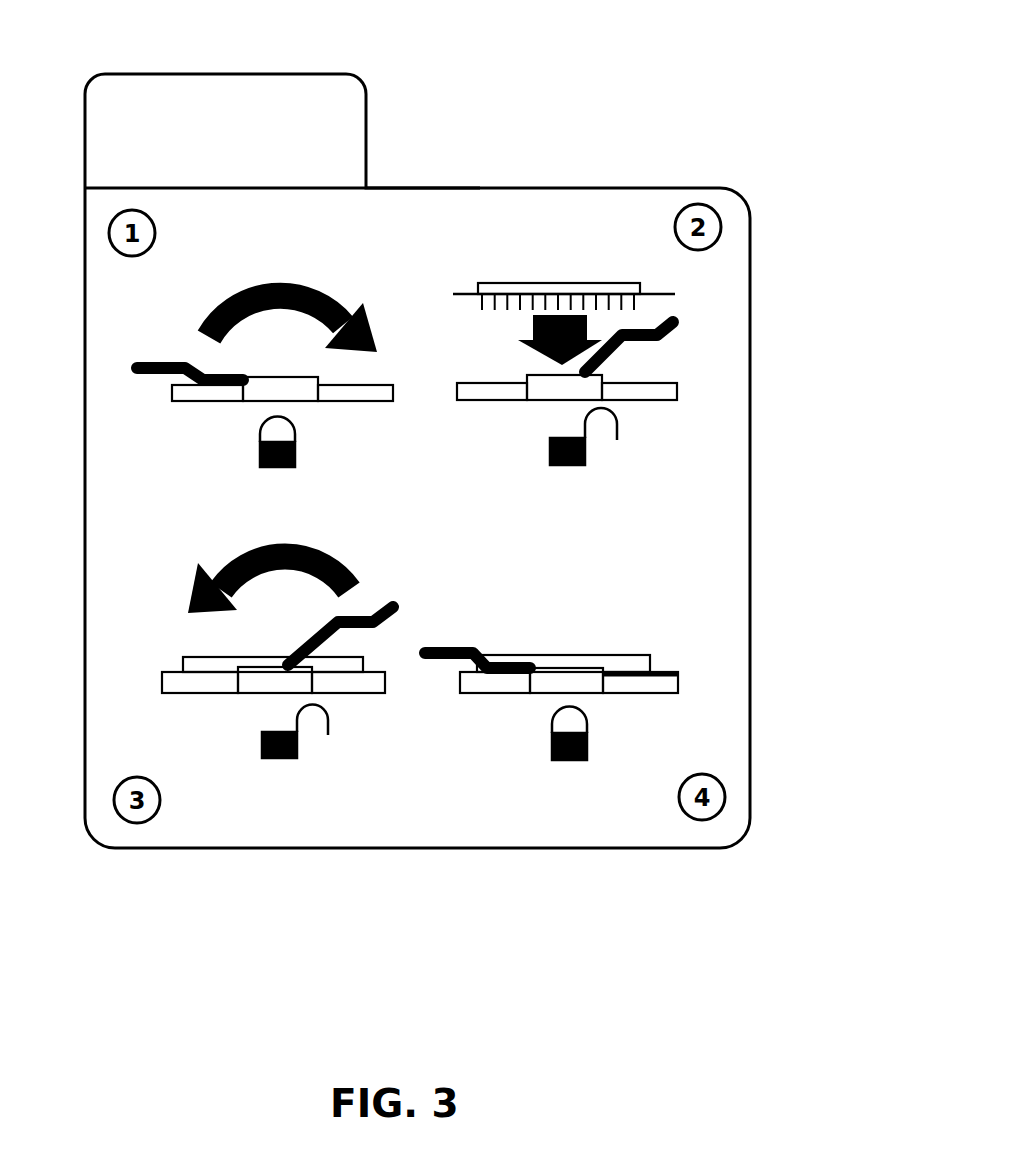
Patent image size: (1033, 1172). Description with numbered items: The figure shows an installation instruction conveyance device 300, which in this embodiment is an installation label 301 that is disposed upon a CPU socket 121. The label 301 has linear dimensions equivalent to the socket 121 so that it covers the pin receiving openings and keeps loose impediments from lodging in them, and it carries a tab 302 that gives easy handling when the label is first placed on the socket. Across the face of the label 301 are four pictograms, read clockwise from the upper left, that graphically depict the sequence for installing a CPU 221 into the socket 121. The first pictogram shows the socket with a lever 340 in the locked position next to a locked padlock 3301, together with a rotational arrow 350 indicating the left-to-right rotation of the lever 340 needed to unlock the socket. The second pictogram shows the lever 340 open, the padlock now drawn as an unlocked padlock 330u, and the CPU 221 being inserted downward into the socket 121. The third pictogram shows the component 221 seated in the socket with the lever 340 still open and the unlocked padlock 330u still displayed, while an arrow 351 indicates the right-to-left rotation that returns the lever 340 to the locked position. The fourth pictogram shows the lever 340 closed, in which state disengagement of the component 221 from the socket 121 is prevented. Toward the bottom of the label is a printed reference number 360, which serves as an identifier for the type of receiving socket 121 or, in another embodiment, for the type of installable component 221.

The installation instruction conveyance device 300 is at (701, 26).
The installation label 301 is at (480, 186).
The tab 302 is at (340, 115).
The CPU 221 is at (640, 285).
The lever 340 is at (135, 370).
The socket 121 is at (172, 400).
The rotational arrow 350 is at (203, 325).
The arrow 351 is at (188, 600).
The locked padlock 3301 is at (258, 460).
The unlocked padlock 330u is at (600, 452).
The part number text 360 is at (410, 835).